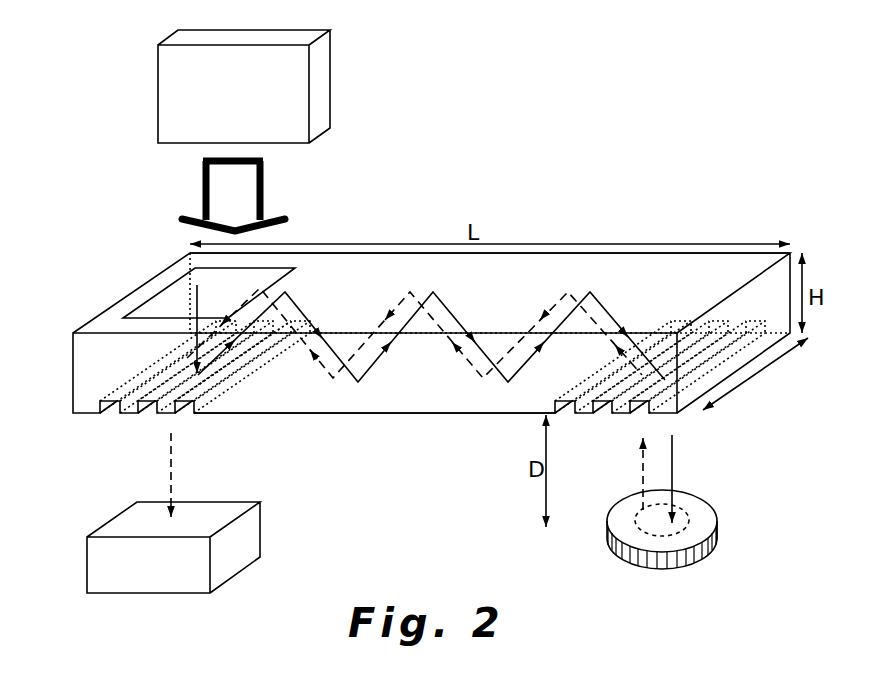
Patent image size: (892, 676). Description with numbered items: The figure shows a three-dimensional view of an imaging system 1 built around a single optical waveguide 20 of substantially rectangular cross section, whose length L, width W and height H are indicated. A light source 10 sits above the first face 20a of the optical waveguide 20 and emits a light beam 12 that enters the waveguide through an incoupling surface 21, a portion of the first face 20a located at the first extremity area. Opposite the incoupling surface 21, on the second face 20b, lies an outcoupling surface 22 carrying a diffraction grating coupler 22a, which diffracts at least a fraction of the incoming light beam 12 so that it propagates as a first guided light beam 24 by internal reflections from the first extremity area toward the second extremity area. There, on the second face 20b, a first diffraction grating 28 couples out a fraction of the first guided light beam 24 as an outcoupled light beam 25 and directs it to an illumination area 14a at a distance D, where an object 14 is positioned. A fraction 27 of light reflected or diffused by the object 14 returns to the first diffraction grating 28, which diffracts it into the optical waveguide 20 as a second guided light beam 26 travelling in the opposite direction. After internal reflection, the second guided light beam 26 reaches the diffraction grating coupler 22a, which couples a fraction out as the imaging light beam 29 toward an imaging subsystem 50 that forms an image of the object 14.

The imaging system 1 is at (518, 121).
The light source 10 is at (318, 80).
The light beam 12 is at (263, 191).
The object 14 is at (683, 535).
The illumination area 14a is at (690, 517).
The optical waveguide 20 is at (667, 283).
The first face 20a is at (482, 263).
The second face 20b is at (410, 400).
The incoupling surface 21 is at (163, 298).
The outcoupling surface 22 is at (112, 428).
The diffraction grating coupler 22a is at (227, 380).
The first guided light beam 24 is at (268, 315).
The outcoupled light beam 25 is at (673, 450).
The second guided light beam 26 is at (550, 310).
The returned light beam 27 is at (640, 472).
The first diffraction grating 28 is at (697, 368).
The imaging light beam 29 is at (172, 453).
The imaging subsystem 50 is at (235, 553).